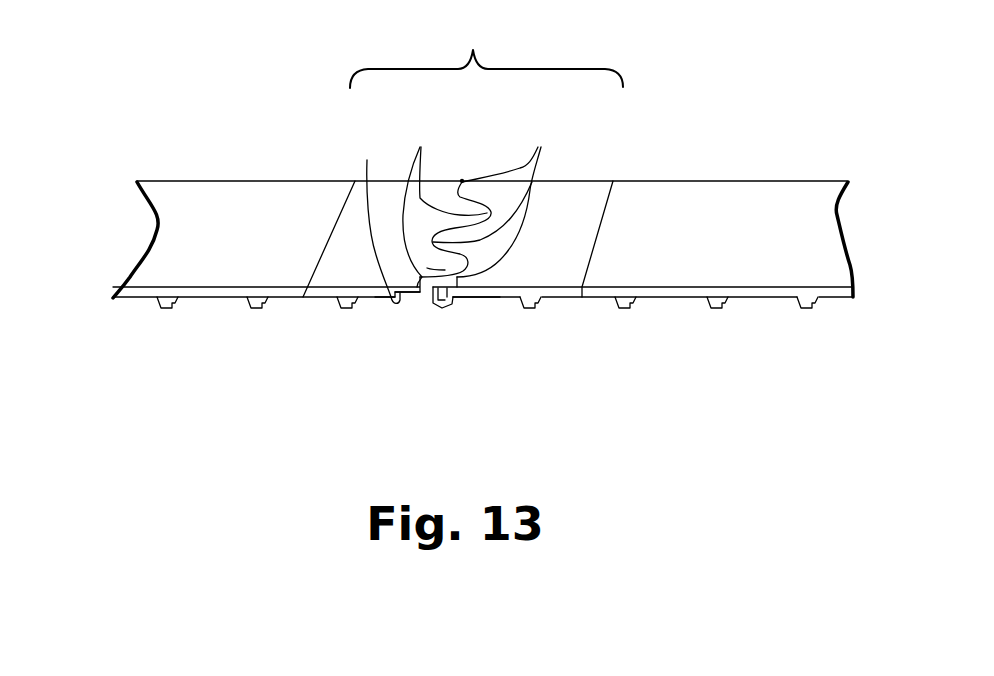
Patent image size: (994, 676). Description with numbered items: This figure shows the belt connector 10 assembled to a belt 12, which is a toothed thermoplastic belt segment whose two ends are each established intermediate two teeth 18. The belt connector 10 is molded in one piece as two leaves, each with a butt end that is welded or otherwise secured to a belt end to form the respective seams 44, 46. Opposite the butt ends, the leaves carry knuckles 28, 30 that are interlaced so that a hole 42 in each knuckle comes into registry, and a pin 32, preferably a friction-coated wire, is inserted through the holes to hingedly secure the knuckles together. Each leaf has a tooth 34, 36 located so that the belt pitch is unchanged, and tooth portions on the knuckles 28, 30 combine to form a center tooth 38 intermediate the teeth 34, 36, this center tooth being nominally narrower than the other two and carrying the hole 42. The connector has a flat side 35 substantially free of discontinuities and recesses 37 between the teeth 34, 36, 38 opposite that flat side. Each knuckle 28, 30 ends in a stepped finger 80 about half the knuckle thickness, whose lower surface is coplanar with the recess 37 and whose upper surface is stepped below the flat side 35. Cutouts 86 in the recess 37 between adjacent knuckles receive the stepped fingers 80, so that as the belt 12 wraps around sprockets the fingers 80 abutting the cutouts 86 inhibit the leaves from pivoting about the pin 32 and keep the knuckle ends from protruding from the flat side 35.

The belt connector 10 is at (486, 55).
The belt 12 is at (196, 204).
The teeth 18 is at (165, 308).
The knuckles 28 is at (447, 201).
The knuckles 30 is at (496, 196).
The pin 32 is at (443, 297).
The tooth 34 is at (342, 307).
The flat side 35 is at (573, 208).
The tooth 36 is at (538, 307).
The recesses 37 is at (380, 298).
The center tooth 38 is at (427, 303).
The hole 42 is at (442, 297).
The seam 44 is at (333, 228).
The seam 46 is at (607, 213).
The stepped finger 80 is at (410, 300).
The cutouts 86 is at (374, 216).